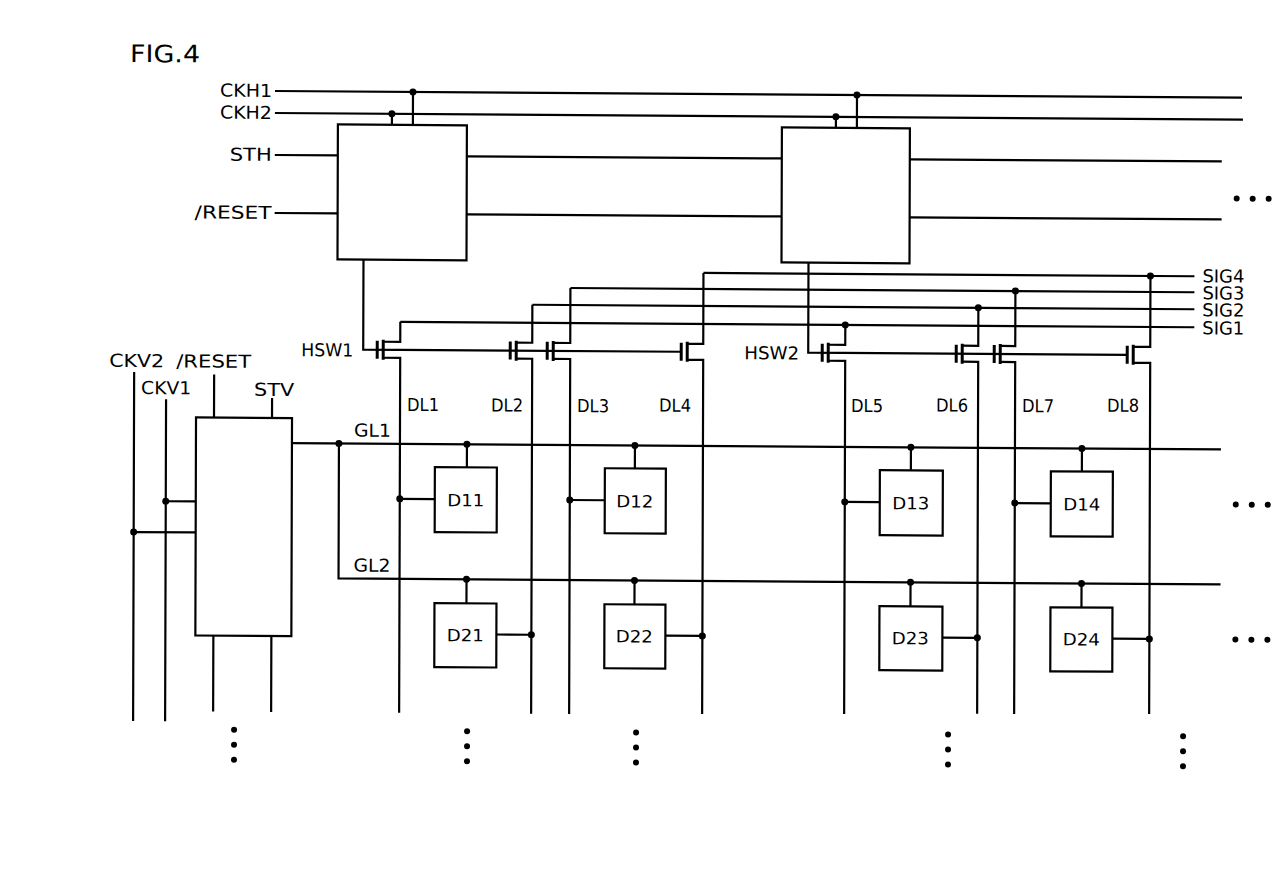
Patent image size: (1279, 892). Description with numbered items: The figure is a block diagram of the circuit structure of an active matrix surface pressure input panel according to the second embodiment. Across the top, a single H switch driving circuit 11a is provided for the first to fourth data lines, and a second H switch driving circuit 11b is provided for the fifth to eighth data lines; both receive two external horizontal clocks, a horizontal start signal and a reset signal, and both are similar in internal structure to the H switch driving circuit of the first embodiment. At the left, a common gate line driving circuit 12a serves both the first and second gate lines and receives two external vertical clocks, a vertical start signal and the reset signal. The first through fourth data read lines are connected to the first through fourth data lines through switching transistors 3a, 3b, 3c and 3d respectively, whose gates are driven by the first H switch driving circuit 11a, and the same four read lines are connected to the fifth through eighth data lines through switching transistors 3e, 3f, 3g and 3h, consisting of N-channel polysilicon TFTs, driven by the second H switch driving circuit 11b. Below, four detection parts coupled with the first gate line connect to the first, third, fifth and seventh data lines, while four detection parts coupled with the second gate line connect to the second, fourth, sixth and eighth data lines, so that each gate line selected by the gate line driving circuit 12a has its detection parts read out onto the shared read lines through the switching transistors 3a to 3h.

The H switch driving circuit 11a is at (469, 135).
The second H switch driving circuit 11b is at (913, 135).
The common gate line driving circuit 12a is at (295, 617).
The switching transistor 3a is at (381, 333).
The switching transistor 3b is at (506, 356).
The switching transistor 3c is at (551, 359).
The switching transistor 3d is at (676, 356).
The switching transistor 3e is at (819, 360).
The switching transistor 3f is at (953, 358).
The switching transistor 3g is at (999, 360).
The switching transistor 3h is at (1122, 359).